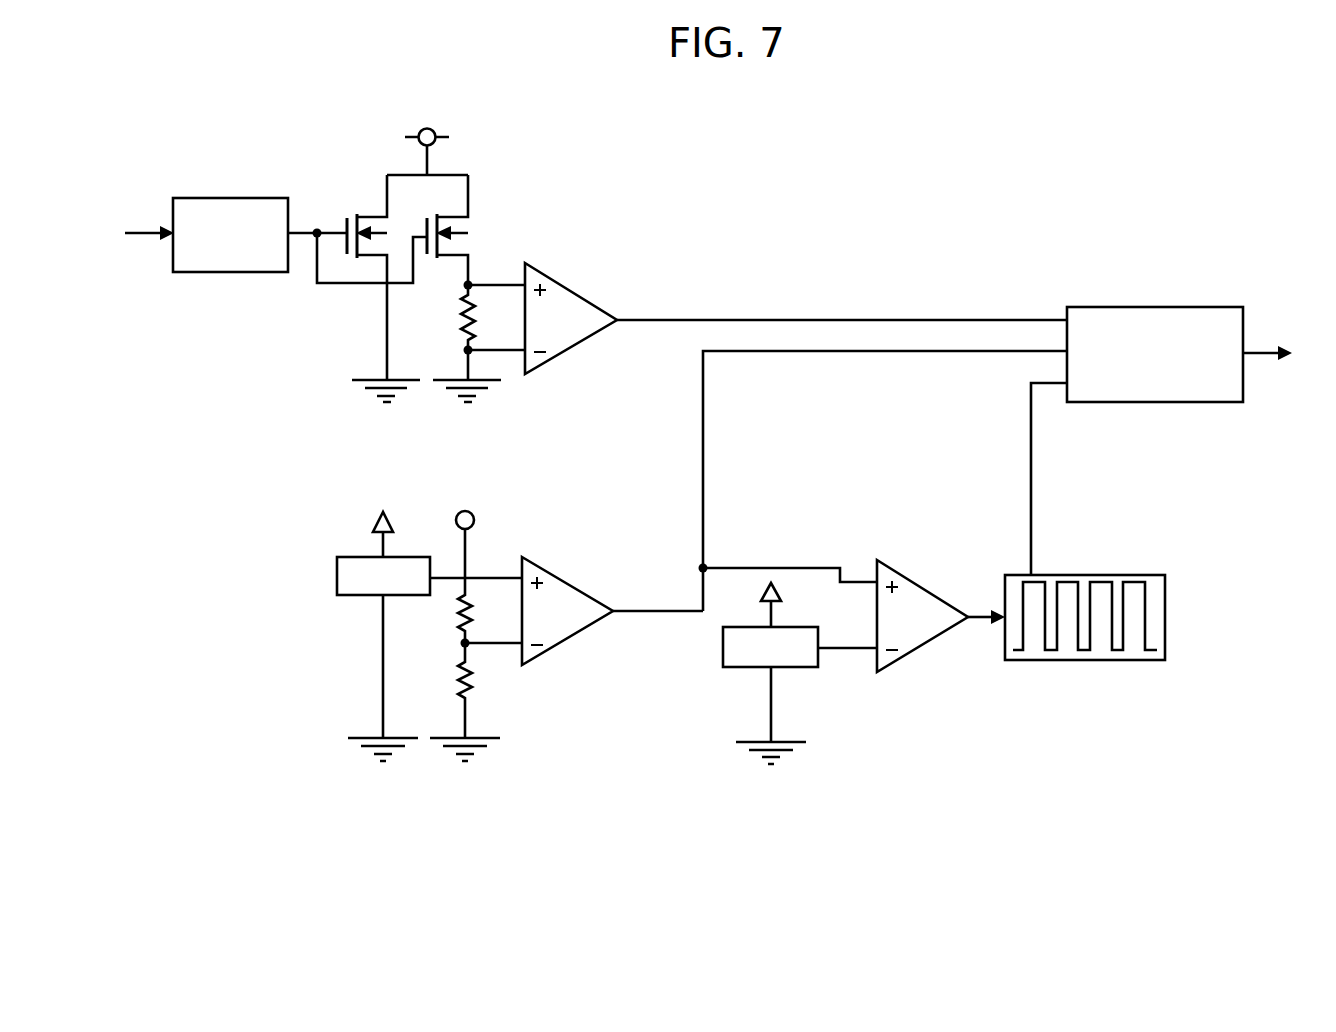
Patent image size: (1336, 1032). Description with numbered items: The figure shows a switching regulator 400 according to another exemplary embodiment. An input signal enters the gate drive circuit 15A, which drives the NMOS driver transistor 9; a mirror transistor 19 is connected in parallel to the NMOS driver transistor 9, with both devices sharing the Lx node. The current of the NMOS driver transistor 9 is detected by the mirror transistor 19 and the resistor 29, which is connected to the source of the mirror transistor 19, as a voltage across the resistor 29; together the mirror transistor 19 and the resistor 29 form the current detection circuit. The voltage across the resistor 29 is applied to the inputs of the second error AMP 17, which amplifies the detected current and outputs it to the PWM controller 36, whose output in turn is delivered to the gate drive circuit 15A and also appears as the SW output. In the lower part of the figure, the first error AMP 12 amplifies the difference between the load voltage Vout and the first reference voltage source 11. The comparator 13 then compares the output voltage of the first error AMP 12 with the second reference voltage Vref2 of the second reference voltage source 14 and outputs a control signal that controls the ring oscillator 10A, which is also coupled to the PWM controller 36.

The switching regulator 400 is at (1081, 186).
The gate drive circuit 15A is at (184, 274).
The NMOS driver transistor 9 is at (358, 211).
The mirror transistor 19 is at (470, 228).
The resistor 29 is at (453, 319).
The second error AMP 17 is at (571, 352).
The PWM controller 36 is at (1220, 403).
The first reference voltage source 11 is at (349, 596).
The first error AMP 12 is at (571, 643).
The second reference voltage source 14 is at (736, 669).
The comparator 13 is at (930, 645).
The ring oscillator 10A is at (1165, 618).